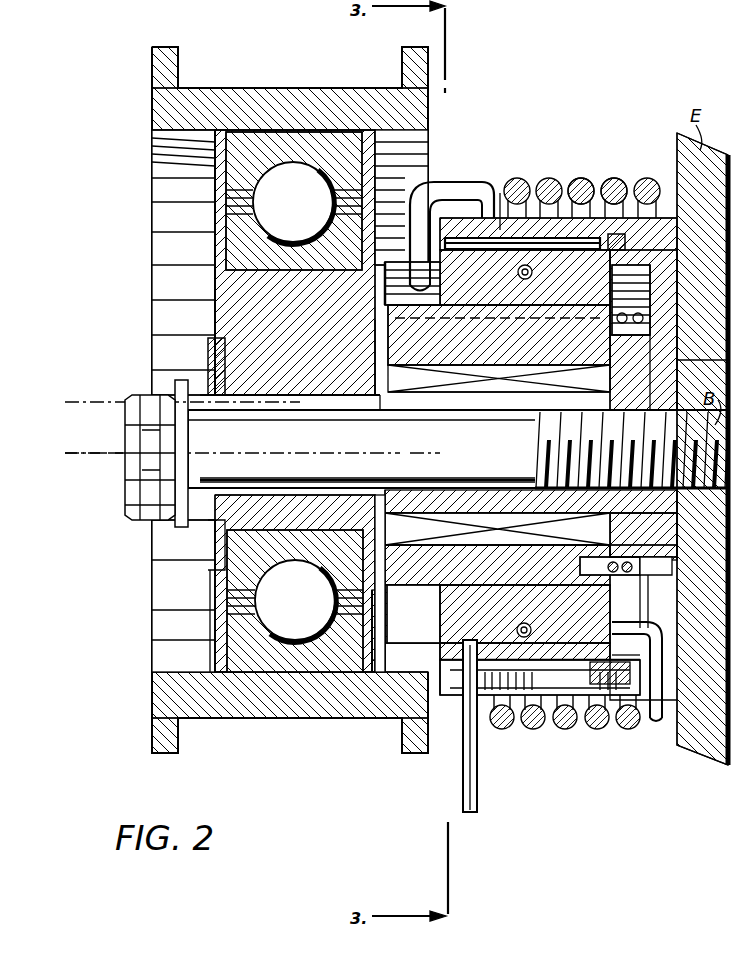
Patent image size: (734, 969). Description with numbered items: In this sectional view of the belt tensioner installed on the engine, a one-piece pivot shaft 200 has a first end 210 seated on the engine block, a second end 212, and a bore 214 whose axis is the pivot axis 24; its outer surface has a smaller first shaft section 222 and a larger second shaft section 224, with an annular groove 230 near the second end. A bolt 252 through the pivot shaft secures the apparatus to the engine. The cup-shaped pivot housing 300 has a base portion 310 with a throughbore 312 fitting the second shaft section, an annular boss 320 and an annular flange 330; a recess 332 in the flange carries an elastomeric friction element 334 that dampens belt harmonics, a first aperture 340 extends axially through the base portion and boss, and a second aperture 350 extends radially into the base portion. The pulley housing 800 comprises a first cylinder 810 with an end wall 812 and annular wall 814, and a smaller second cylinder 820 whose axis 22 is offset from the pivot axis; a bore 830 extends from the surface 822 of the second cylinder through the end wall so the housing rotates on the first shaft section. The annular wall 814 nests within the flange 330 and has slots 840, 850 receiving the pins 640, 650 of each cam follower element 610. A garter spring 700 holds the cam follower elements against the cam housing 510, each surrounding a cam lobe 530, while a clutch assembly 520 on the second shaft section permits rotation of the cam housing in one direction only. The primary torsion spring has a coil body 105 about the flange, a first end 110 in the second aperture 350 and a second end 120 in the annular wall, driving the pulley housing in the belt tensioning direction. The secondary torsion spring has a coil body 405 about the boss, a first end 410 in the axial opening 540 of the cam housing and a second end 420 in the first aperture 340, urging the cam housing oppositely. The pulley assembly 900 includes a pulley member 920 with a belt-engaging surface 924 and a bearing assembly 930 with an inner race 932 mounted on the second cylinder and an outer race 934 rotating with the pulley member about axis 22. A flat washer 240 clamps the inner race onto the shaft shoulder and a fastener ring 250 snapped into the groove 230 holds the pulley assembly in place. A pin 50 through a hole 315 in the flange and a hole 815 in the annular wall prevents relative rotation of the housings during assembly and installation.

The belt engaging pulley assembly 900 is at (118, 78).
The external surface 924 is at (284, 88).
The pulley member 920 is at (175, 140).
The second cylinder 820 is at (252, 288).
The surface of the second cylinder 822 is at (215, 300).
The pulley housing 800 is at (340, 510).
The flat washer 240 is at (220, 352).
The annular fastener ring 250 is at (220, 386).
The cylindrical bore 830 is at (343, 400).
The pivot shaft 200 is at (532, 412).
The longitudinal axis of the second cylinder 22 is at (115, 400).
The pivot axis 24 is at (112, 452).
The bolt 252 is at (135, 470).
The second end 212 is at (208, 412).
The first shaft section 222 is at (300, 398).
The bore 214 is at (388, 405).
The second shaft section 224 is at (465, 402).
The annular groove 230 is at (215, 500).
The garter spring 700 is at (518, 275).
The cam lobe 530 is at (385, 303).
The cam housing 510 is at (509, 346).
The clutch assembly 520 is at (541, 352).
The cam follower element 610 is at (578, 296).
The pin 640 is at (520, 180).
The pin 650 is at (578, 195).
The second slot 850 is at (618, 195).
The first slot 840 is at (470, 210).
The second end 120 is at (440, 180).
The pivot housing 300 is at (662, 258).
The coil body 405 is at (655, 318).
The annular base portion 310 is at (665, 345).
The throughbore 312 is at (618, 398).
The first end 210 is at (673, 395).
The annular boss 320 is at (662, 518).
The axial opening 540 is at (600, 550).
The second end 420 is at (580, 572).
The first aperture 340 is at (655, 550).
The first end 410 is at (660, 565).
The annular wall 814 is at (497, 645).
The end wall 812 is at (388, 604).
The hole 815 is at (448, 655).
The first cylinder 810 is at (415, 650).
The annular recess 332 is at (600, 655).
The annular flange 330 is at (585, 720).
The coil body 105 is at (525, 728).
The second aperture 350 is at (664, 610).
The first end 110 is at (655, 720).
The annular elastomeric friction element 334 is at (645, 660).
The pin 50 is at (455, 752).
The hole 315 is at (462, 680).
The bearing assembly 930 is at (215, 608).
The inner race 932 is at (228, 550).
The outer race 934 is at (230, 645).